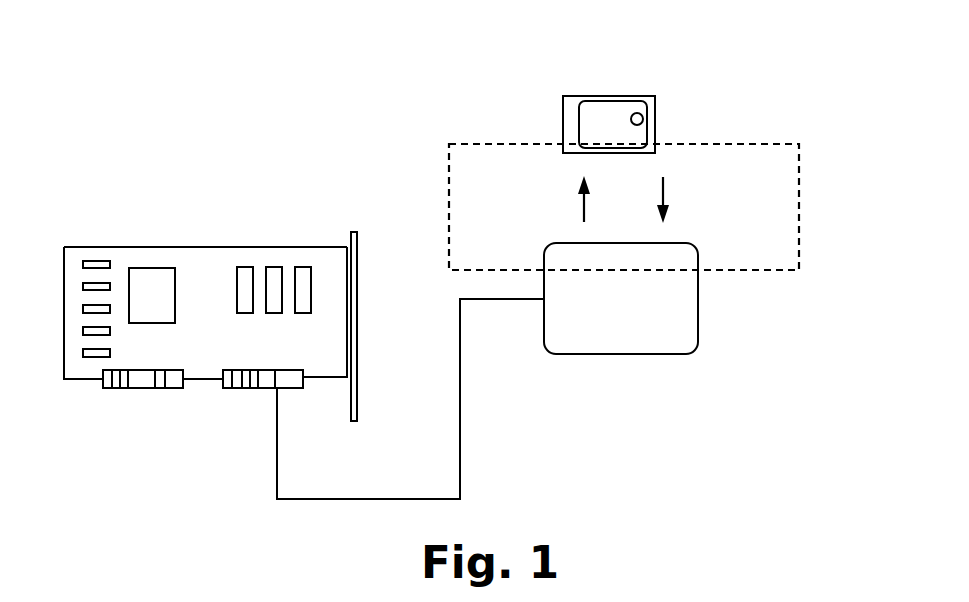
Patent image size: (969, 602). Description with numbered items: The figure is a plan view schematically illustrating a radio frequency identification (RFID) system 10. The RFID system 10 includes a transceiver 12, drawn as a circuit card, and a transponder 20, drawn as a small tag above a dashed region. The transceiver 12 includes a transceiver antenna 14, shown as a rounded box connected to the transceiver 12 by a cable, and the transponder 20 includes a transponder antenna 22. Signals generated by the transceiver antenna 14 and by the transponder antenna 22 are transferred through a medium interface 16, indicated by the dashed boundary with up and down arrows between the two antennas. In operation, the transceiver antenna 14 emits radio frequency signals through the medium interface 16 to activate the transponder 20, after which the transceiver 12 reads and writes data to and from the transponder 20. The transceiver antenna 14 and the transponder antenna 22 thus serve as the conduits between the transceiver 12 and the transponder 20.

The RFID system 10 is at (207, 143).
The transceiver 12 is at (65, 303).
The transceiver antenna 14 is at (698, 325).
The medium interface 16 is at (799, 168).
The transponder 20 is at (627, 93).
The transponder antenna 22 is at (577, 110).